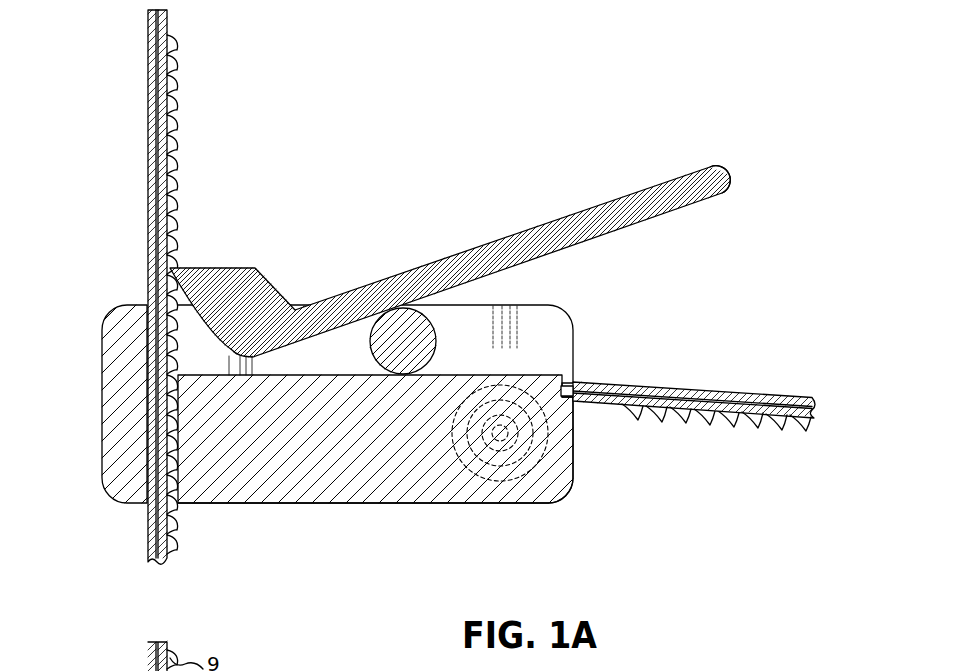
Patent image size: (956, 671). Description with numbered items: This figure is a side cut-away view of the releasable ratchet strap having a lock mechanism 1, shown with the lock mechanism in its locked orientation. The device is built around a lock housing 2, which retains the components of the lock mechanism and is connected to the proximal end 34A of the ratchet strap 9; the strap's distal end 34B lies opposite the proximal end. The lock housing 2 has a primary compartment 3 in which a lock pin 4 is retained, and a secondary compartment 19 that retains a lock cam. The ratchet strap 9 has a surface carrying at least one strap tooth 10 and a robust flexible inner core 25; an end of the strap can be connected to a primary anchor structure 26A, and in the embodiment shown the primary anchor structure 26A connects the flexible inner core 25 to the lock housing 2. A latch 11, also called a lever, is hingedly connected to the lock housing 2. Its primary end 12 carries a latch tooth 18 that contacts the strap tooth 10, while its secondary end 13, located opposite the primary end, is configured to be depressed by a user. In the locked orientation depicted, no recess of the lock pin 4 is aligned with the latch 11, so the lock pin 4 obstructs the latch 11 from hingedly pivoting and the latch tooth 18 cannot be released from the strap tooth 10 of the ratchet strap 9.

The releasable ratchet strap having a lock mechanism 1 is at (422, 127).
The lock housing 2 is at (320, 493).
The primary compartment 3 is at (433, 316).
The lock pin 4 is at (406, 312).
The ratchet strap 9 is at (170, 33).
The strap tooth 10 is at (170, 266).
The latch 11 is at (336, 300).
The primary end 12 is at (240, 292).
The secondary end 13 is at (692, 172).
The latch tooth 18 is at (190, 268).
The secondary compartment 19 is at (548, 448).
The flexible inner core 25 is at (645, 405).
The primary anchor structure 26A is at (575, 380).
The proximal end 34A is at (578, 386).
The distal end 34B is at (148, 24).